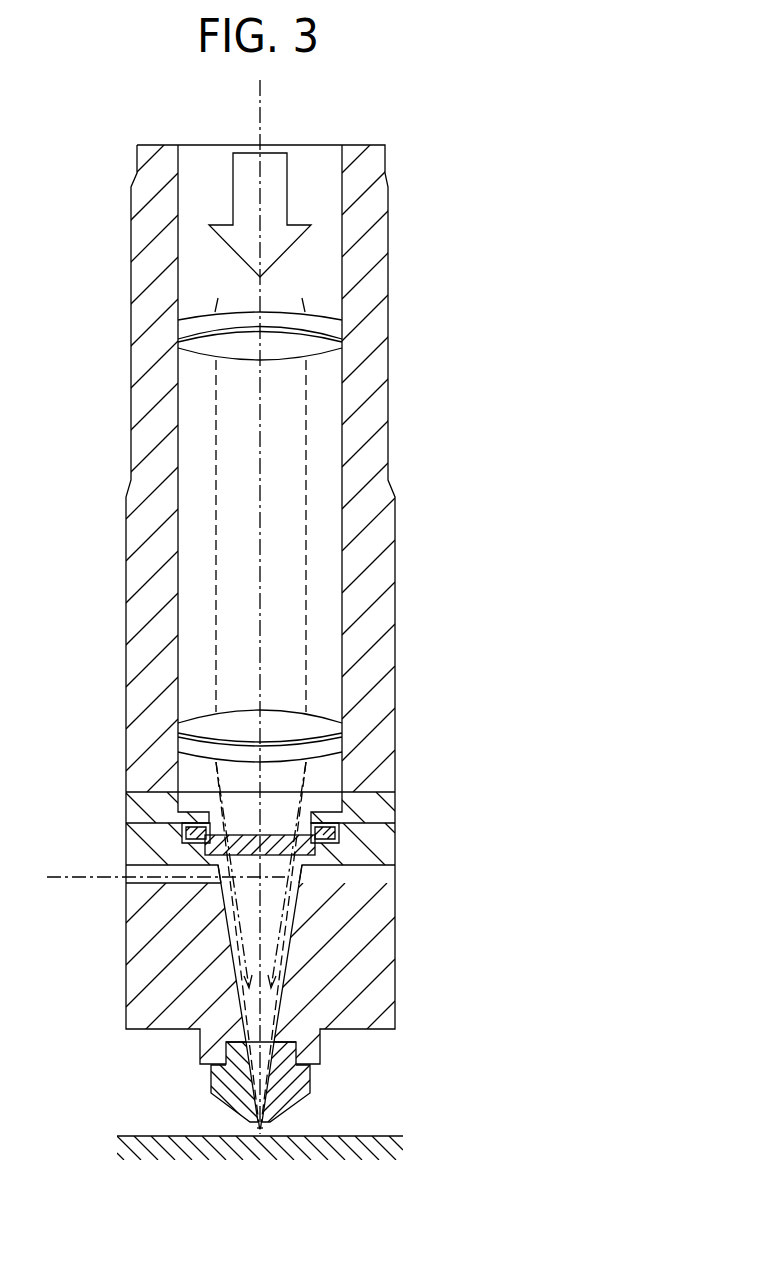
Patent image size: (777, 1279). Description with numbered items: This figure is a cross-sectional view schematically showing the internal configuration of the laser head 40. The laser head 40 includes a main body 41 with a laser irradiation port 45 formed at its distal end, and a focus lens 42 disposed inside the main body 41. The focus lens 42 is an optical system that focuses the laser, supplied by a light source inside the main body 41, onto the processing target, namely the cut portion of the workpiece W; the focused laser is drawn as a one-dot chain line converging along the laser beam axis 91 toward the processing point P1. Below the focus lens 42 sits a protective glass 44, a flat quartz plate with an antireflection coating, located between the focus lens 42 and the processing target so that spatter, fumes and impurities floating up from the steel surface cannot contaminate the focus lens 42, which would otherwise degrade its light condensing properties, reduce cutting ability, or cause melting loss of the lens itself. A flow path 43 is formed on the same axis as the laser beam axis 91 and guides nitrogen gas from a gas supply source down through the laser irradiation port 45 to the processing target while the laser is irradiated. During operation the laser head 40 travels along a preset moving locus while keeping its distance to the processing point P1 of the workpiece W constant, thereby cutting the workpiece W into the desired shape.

The laser head 40 is at (522, 290).
The main body 41 is at (388, 237).
The focus lens 42 is at (330, 743).
The flow path 43 is at (236, 942).
The protective glass 44 is at (312, 808).
The laser irradiation port 45 is at (255, 1122).
The laser beam axis 91 is at (258, 640).
The processing point P1 is at (284, 1129).
The workpiece W is at (390, 1136).